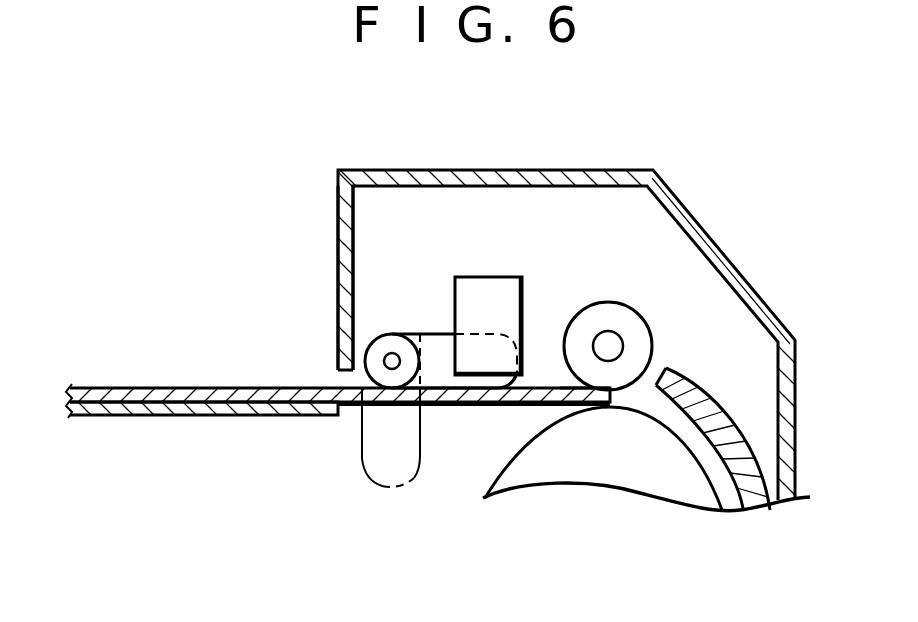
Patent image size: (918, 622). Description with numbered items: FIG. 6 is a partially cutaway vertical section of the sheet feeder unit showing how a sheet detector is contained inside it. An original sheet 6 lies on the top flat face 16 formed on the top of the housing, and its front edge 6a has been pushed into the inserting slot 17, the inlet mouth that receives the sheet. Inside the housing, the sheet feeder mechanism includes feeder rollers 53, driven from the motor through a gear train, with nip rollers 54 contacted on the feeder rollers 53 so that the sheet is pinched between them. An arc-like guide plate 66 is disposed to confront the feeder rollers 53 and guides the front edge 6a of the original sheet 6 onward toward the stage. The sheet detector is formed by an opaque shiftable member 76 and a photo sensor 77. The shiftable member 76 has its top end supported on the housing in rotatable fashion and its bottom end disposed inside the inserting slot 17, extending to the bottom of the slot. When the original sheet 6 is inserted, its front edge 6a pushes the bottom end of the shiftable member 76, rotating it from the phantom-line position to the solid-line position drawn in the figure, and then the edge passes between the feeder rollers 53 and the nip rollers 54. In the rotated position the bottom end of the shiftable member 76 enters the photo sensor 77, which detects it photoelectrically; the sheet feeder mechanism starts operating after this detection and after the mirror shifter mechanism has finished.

The original sheet 6 is at (142, 387).
The front edge 6a is at (578, 394).
The top flat face 16 is at (143, 416).
The inserting slot 17 is at (342, 377).
The feeder rollers 53 is at (511, 465).
The nip rollers 54 is at (578, 318).
The arc-like guide plate 66 is at (698, 389).
The shiftable member 76 is at (420, 334).
The photo sensor 77 is at (491, 276).